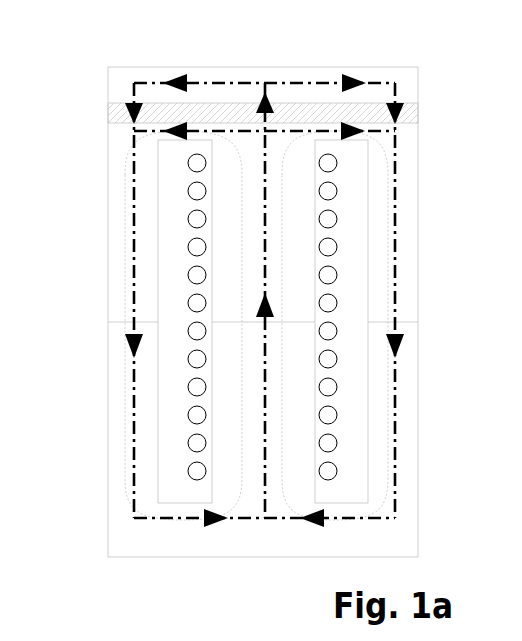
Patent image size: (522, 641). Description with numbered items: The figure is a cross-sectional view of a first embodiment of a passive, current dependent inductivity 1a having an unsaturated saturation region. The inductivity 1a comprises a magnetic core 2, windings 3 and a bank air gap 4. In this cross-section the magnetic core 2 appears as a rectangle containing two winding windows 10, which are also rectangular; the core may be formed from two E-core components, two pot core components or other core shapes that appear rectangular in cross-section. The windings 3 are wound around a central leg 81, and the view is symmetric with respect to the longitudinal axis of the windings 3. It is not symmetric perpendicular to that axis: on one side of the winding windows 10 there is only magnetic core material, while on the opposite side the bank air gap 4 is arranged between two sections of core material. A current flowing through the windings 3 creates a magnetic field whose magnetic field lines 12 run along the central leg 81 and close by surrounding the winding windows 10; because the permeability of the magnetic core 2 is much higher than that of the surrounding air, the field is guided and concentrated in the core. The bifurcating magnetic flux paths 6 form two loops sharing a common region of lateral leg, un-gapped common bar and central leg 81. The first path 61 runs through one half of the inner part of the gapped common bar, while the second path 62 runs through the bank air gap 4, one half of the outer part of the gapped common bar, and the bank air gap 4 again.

The passive, current dependent inductivity 1a is at (117, 57).
The magnetic core 2 is at (128, 528).
The windings 3 is at (327, 413).
The bank air gap 4 is at (127, 110).
The magnetic flux paths 6 is at (235, 518).
The winding windows 10 is at (352, 480).
The magnetic field lines 12 is at (123, 403).
The first path 61 is at (341, 140).
The second path 62 is at (310, 82).
The central leg 81 is at (233, 245).